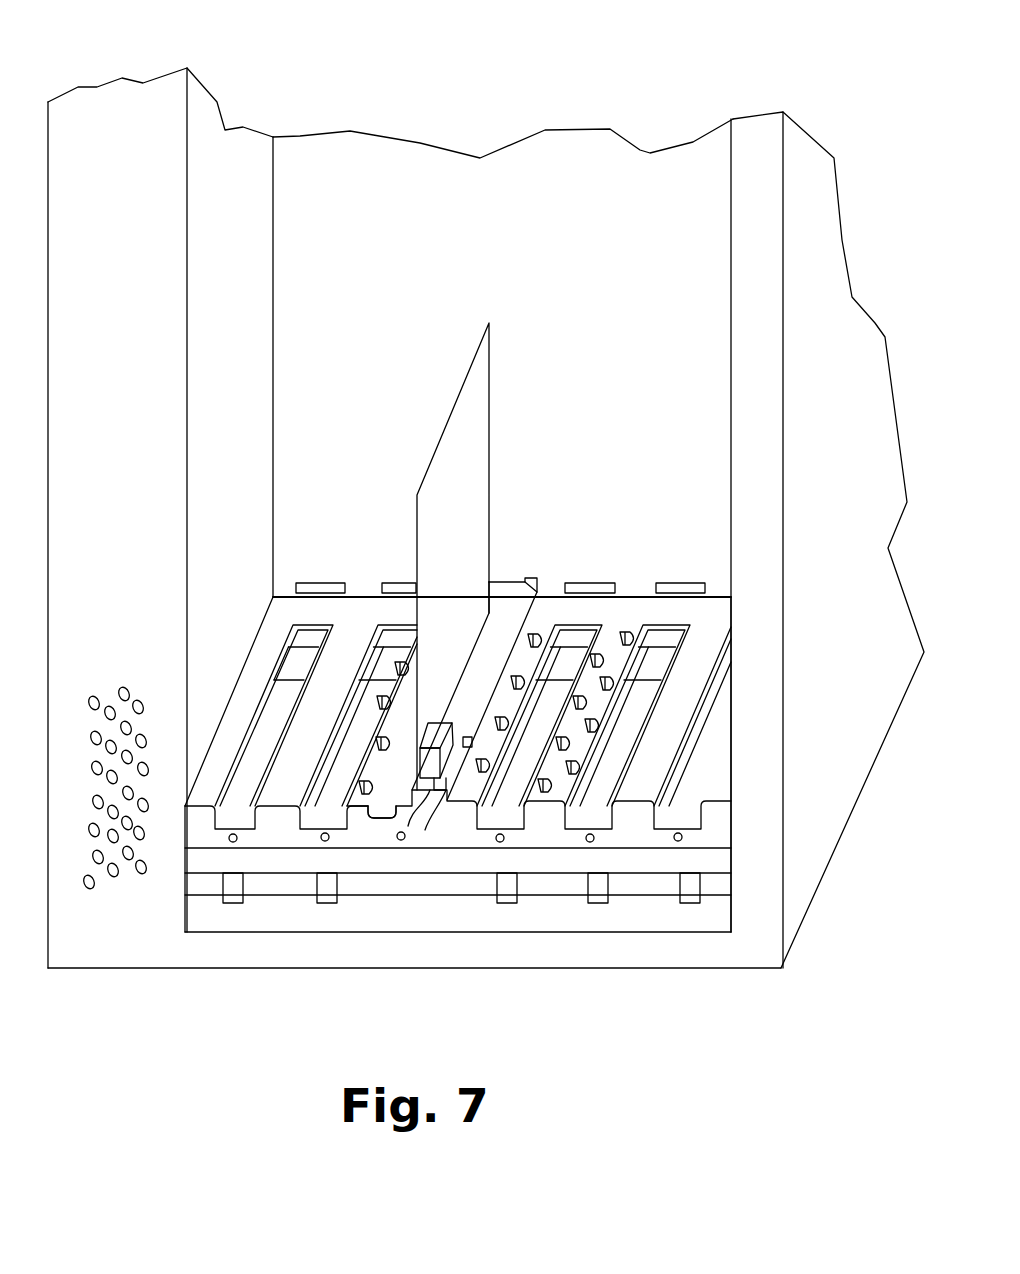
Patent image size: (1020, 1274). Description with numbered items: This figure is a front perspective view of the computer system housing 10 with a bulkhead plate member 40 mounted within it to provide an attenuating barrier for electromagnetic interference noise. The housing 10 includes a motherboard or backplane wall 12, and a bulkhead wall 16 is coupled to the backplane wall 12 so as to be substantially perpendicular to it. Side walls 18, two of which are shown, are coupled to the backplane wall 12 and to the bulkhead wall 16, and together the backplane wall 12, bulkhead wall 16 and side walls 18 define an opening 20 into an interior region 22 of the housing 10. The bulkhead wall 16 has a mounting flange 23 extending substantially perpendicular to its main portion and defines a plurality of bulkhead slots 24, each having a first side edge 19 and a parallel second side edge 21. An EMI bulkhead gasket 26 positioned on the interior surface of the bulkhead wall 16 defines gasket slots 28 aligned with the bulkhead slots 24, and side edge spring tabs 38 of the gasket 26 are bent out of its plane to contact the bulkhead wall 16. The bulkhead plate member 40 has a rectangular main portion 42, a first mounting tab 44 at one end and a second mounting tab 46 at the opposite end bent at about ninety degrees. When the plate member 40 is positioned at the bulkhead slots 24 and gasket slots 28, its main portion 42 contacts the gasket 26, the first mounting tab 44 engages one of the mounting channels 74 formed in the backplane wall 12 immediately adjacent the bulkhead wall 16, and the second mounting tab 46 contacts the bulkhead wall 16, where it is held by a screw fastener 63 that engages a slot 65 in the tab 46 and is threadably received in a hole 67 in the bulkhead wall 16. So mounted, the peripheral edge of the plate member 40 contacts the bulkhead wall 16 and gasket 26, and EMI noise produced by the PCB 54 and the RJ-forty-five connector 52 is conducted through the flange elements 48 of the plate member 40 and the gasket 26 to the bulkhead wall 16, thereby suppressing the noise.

The computer system housing 10 is at (852, 175).
The backplane wall 12 is at (672, 188).
The bulkhead wall 16 is at (476, 806).
The side walls 18 is at (226, 160).
The first side edge 19 is at (280, 672).
The opening 20 is at (712, 485).
The second side edge 21 is at (316, 660).
The interior region 22 is at (690, 358).
The mounting flange 23 is at (660, 808).
The bulkhead slots 24 is at (292, 691).
The EMI bulkhead gasket 26 is at (286, 600).
The gasket slots 28 is at (236, 748).
The side edge spring tabs 38 is at (627, 636).
The bulkhead plate member 40 is at (512, 592).
The main portion 42 is at (461, 633).
The first mounting tab 44 is at (497, 585).
The second mounting tab 46 is at (430, 830).
The flange elements 48 is at (372, 818).
The RJ-45 connector 52 is at (447, 724).
The PCB 54 is at (480, 400).
The screw fastener 63 is at (396, 822).
The slot 65 is at (401, 840).
The hole 67 is at (325, 841).
The mounting channels 74 is at (600, 655).